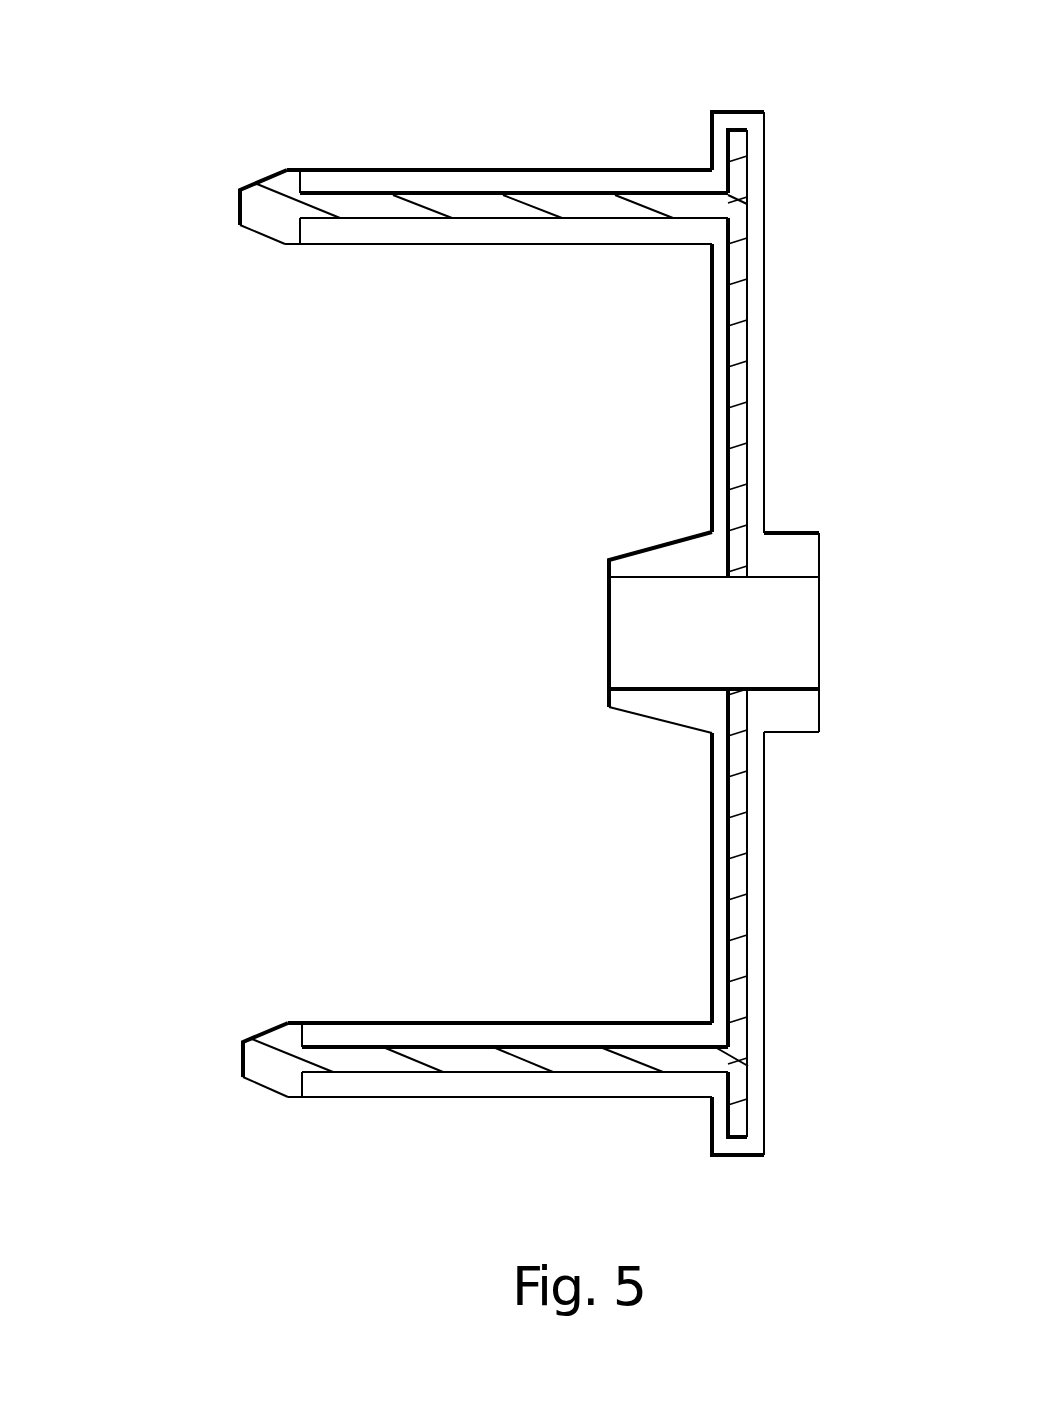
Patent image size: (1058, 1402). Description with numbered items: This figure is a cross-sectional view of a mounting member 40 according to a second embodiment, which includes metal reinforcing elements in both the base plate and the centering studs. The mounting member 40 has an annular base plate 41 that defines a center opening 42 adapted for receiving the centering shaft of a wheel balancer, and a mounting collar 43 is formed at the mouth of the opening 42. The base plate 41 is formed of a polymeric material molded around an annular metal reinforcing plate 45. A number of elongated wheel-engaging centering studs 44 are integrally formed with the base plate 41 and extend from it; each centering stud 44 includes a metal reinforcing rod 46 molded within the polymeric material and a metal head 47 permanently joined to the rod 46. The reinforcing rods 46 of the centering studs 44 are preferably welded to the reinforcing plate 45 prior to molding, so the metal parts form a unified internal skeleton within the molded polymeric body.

The mounting member 40 is at (130, 180).
The annular base plate 41 is at (765, 443).
The center opening 42 is at (778, 578).
The mounting collar 43 is at (658, 555).
The centering stud 44 is at (408, 245).
The annular metal reinforcing plate 45 is at (738, 334).
The metal reinforcing rod 46 is at (507, 210).
The metal head 47 is at (273, 222).